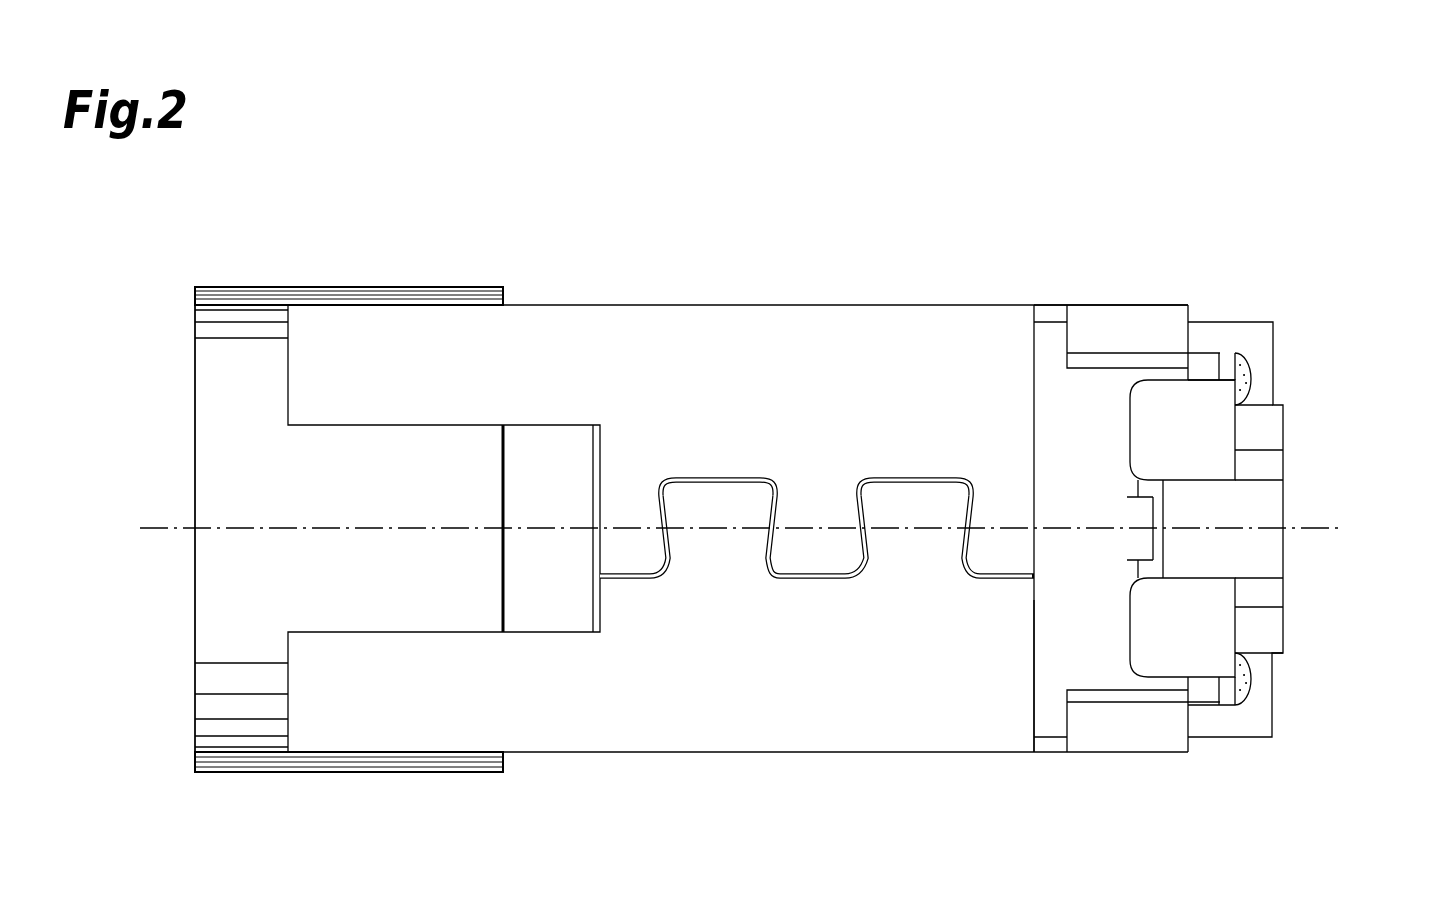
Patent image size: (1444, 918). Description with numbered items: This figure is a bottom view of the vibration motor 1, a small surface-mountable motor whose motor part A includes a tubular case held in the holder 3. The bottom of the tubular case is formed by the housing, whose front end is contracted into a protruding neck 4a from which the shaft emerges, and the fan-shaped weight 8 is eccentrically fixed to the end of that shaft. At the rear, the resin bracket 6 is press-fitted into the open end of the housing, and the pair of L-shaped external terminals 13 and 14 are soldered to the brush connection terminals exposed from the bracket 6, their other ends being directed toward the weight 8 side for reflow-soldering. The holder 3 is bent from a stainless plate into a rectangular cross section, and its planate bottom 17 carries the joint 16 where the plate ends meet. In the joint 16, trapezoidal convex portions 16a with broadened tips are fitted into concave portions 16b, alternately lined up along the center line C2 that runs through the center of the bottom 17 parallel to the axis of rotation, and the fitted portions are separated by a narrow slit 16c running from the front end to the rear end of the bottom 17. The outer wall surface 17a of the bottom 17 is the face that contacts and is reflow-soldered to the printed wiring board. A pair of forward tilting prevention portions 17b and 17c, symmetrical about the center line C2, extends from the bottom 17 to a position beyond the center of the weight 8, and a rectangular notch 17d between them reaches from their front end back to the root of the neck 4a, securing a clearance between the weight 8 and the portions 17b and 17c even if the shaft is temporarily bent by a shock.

The vibration motor 1 is at (1155, 266).
The holder 3 is at (1010, 757).
The neck 4a is at (550, 453).
The bracket 6 is at (1275, 350).
The weight 8 is at (229, 286).
The external terminal 13 is at (1239, 632).
The external terminal 14 is at (1239, 427).
The joint 16 is at (901, 565).
The trapezoidal convex portion 16a is at (727, 500).
The concave portion 16b is at (705, 580).
The slit 16c is at (1042, 582).
The bottom 17 is at (642, 755).
The outer wall surface 17a is at (970, 700).
The forward tilting prevention portion 17b is at (367, 715).
The forward tilting prevention portion 17c is at (380, 360).
The notch 17d is at (335, 475).
The motor part A is at (175, 301).
The center line C2 is at (1305, 523).